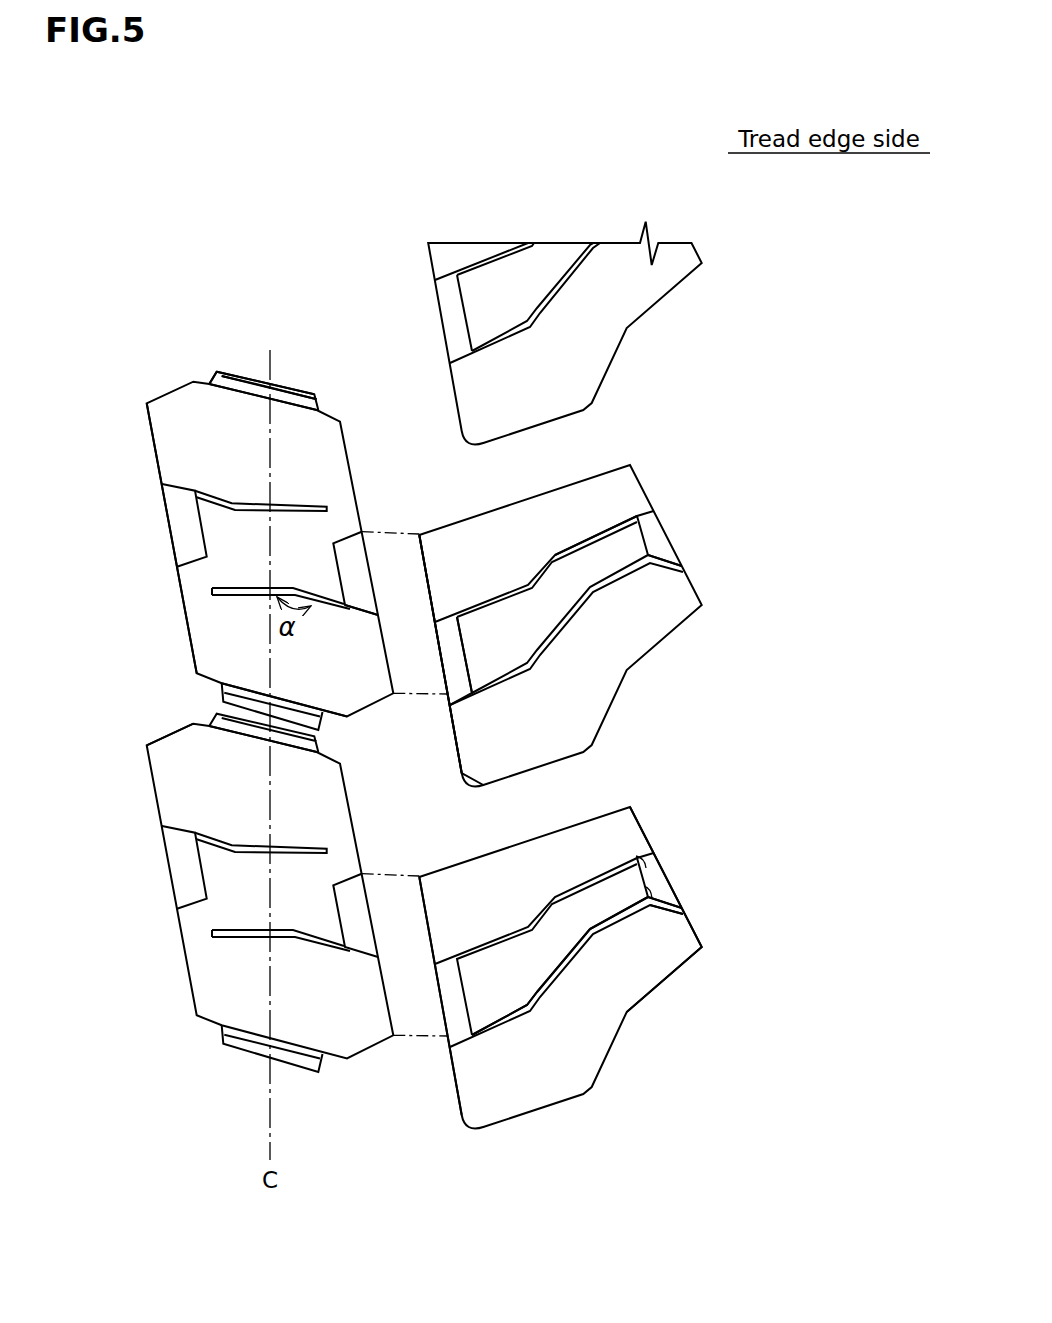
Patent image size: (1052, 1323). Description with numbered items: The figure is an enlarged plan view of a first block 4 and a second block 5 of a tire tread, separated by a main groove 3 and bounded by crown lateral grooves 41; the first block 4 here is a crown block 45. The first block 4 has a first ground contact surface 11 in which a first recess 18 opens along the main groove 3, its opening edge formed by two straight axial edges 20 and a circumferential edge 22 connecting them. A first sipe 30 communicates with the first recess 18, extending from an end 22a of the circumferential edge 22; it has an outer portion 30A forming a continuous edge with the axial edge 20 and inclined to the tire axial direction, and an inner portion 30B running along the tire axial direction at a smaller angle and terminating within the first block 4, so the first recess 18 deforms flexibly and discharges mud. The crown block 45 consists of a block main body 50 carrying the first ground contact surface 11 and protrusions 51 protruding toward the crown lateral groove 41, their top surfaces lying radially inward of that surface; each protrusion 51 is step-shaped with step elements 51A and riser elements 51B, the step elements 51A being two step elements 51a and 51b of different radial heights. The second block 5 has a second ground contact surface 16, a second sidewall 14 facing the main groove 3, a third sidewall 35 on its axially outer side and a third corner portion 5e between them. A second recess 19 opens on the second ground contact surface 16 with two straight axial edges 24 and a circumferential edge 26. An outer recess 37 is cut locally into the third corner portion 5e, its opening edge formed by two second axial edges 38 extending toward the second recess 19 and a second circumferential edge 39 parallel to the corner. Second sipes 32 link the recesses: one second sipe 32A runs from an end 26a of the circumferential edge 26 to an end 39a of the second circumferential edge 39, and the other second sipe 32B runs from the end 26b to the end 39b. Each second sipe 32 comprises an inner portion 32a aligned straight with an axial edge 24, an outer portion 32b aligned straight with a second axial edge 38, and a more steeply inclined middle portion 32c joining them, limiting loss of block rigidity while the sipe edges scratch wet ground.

The main groove 3 is at (392, 297).
The first block 4 is at (232, 978).
The crown block 45 is at (205, 428).
The second block 5 is at (483, 1093).
The second ground contact surface 16 is at (592, 503).
The third corner portion 5e is at (704, 952).
The second sidewall 14 is at (443, 660).
The first recess 18 is at (183, 508).
The second recess 19 is at (455, 680).
The axial edge 20 is at (487, 505).
The circumferential edge 22 is at (200, 500).
The end of circumferential edge 22a is at (345, 606).
The axial edge 24 is at (465, 1045).
The circumferential edge 26 is at (467, 652).
The end of circumferential edge 26a is at (570, 498).
The end of circumferential edge 26b is at (472, 695).
The first sipe 30 is at (232, 500).
The outer portion 30A is at (200, 735).
The inner portion 30B is at (240, 598).
The second sipe 32 is at (600, 532).
The second sipe 32A is at (596, 535).
The second sipe 32B is at (578, 610).
The inner portion 32a is at (500, 1028).
The outer portion 32b is at (608, 923).
The middle portion 32c is at (551, 983).
The third sidewall 35 is at (688, 577).
The outer recess 37 is at (655, 537).
The second axial edge 38 is at (648, 864).
The second circumferential edge 39 is at (648, 907).
The end of second circumferential edge 39a is at (637, 857).
The end of second circumferential edge 39b is at (677, 900).
The crown lateral groove 41 is at (203, 377).
The block main body 50 is at (211, 590).
The first ground contact surface 11 is at (281, 940).
The protrusion 51 is at (315, 232).
The step element 51A is at (358, 290).
The riser element 51B is at (210, 383).
The step element 51a is at (238, 392).
The step element 51b is at (295, 395).